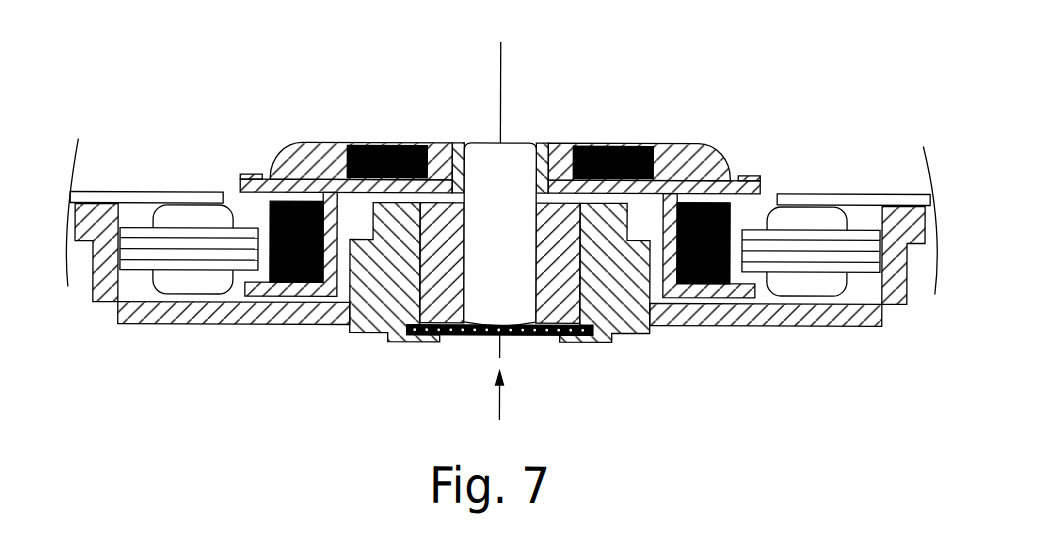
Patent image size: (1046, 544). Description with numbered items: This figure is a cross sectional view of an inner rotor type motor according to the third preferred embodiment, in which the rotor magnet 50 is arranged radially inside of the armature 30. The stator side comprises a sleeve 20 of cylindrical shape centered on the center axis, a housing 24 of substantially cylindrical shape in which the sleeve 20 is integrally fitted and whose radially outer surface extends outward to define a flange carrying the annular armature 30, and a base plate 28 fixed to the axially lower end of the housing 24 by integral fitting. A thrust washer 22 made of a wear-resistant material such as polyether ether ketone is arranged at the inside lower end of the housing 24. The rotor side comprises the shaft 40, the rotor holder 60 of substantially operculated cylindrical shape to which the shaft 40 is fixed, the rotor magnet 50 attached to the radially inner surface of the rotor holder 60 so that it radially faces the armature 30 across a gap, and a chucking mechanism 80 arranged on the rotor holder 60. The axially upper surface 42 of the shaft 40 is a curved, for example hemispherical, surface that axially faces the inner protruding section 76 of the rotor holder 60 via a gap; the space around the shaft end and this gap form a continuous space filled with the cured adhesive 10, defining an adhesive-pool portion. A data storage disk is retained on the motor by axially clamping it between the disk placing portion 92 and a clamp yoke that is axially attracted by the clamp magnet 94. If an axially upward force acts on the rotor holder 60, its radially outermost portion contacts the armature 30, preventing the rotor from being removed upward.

The cured adhesive 10 is at (502, 247).
The sleeve 20 is at (567, 333).
The thrust washer 22 is at (455, 333).
The housing 24 is at (610, 333).
The base plate 28 is at (128, 305).
The armature 30 is at (828, 265).
The shaft 40 is at (443, 333).
The axially upper surface 42 is at (497, 141).
The rotor magnet 50 is at (715, 293).
The rotor holder 60 is at (670, 303).
The inner protruding section 76 is at (542, 145).
The chucking mechanism 80 is at (702, 144).
The disk placing portion 92 is at (748, 176).
The clamp magnet 94 is at (596, 142).